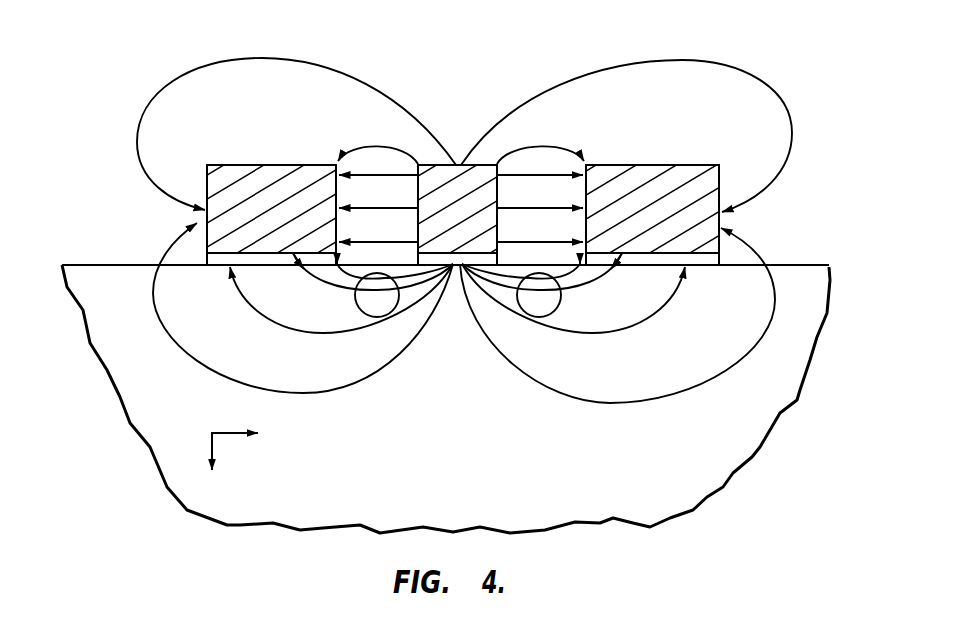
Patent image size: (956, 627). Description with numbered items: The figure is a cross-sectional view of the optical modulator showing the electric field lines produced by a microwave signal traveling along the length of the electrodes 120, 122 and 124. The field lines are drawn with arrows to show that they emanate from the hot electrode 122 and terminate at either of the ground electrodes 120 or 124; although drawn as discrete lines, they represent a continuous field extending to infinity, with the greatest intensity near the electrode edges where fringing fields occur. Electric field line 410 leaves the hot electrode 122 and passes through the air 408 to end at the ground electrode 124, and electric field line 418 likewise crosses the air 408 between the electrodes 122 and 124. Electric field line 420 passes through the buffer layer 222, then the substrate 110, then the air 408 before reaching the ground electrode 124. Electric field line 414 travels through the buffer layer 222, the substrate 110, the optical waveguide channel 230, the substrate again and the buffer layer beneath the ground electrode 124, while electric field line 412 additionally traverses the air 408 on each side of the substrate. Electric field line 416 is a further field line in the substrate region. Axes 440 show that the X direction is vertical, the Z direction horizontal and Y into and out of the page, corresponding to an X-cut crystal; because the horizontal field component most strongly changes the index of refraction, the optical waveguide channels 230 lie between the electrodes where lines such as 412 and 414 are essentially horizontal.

The substrate 110 is at (730, 460).
The ground electrode 120 is at (225, 176).
The hot electrode 122 is at (460, 177).
The ground electrode 124 is at (650, 178).
The buffer layer 222 is at (226, 268).
The optical waveguide channel 230 is at (368, 293).
The air 408 is at (792, 52).
The electric field line 410 is at (655, 60).
The electric field line 412 is at (576, 283).
The electric field line 414 is at (574, 302).
The third field line 416 is at (619, 343).
The electric field line 418 is at (563, 206).
The electric field line 420 is at (668, 421).
The axes 440 is at (203, 433).